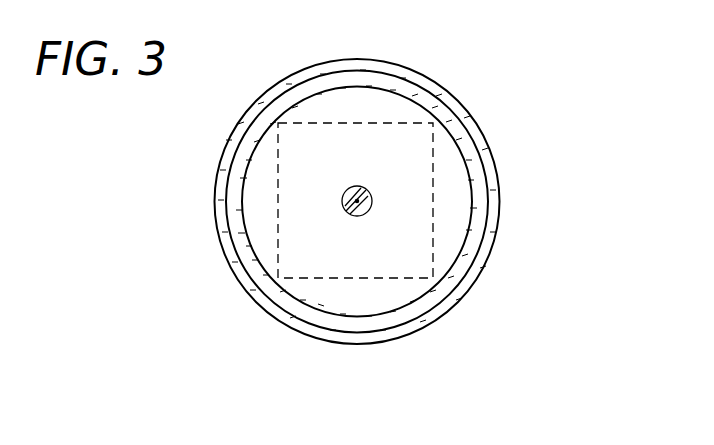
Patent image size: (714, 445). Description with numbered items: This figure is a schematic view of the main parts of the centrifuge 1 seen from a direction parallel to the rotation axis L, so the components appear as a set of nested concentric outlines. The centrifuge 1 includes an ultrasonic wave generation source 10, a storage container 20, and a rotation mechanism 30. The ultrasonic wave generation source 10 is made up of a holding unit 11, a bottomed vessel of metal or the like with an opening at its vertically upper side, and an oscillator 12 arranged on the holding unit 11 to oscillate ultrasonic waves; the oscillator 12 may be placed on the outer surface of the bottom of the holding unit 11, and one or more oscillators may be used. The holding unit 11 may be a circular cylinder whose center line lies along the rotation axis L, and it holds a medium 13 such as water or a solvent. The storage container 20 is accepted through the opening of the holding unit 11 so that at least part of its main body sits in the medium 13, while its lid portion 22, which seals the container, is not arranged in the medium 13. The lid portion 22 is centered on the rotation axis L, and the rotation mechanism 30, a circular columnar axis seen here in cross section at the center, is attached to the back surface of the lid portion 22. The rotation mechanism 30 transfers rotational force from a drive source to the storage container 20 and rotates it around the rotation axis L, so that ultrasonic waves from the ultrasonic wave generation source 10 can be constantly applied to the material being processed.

The centrifuge 1 is at (356, 196).
The ultrasonic wave generation source 10 is at (316, 201).
The holding unit 11 is at (217, 225).
The oscillator 12 is at (283, 265).
The medium 13 is at (220, 188).
The storage container 20 is at (463, 210).
The lid portion 22 is at (399, 200).
The rotation mechanism 30 is at (369, 210).
The rotation axis L is at (355, 201).